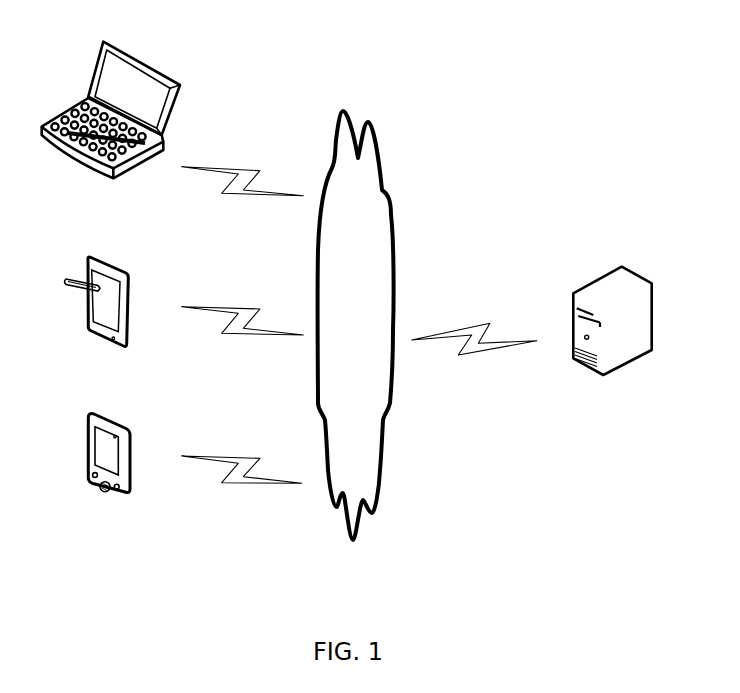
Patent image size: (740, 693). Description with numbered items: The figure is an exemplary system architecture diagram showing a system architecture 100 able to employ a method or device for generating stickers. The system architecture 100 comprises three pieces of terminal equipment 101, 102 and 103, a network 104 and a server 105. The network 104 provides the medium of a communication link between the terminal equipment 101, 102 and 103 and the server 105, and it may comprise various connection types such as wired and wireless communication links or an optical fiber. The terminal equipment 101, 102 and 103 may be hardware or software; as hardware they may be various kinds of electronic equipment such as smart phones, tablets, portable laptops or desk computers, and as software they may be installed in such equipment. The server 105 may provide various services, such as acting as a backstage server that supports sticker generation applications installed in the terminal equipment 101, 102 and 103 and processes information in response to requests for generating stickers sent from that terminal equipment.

The system architecture 100 is at (535, 34).
The terminal equipment 101 is at (107, 474).
The terminal equipment 102 is at (97, 319).
The terminal equipment 103 is at (111, 125).
The network 104 is at (356, 325).
The server 105 is at (612, 338).